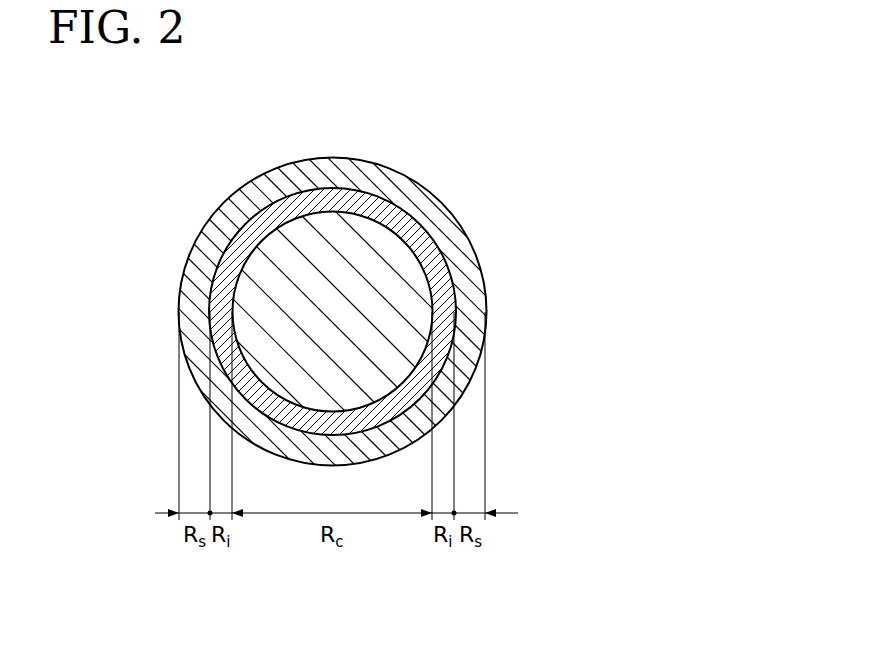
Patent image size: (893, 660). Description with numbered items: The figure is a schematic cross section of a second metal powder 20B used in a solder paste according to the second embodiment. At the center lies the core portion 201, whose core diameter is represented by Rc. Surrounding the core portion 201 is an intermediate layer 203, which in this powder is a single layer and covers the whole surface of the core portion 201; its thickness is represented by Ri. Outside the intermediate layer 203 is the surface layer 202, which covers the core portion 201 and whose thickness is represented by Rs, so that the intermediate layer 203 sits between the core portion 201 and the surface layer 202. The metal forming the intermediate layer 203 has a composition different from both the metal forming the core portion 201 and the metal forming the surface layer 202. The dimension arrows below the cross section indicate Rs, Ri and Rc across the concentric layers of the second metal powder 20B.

The second metal powder 20B is at (445, 150).
The core portion 201 is at (266, 302).
The surface layer 202 is at (475, 305).
The intermediate layer 203 is at (447, 281).